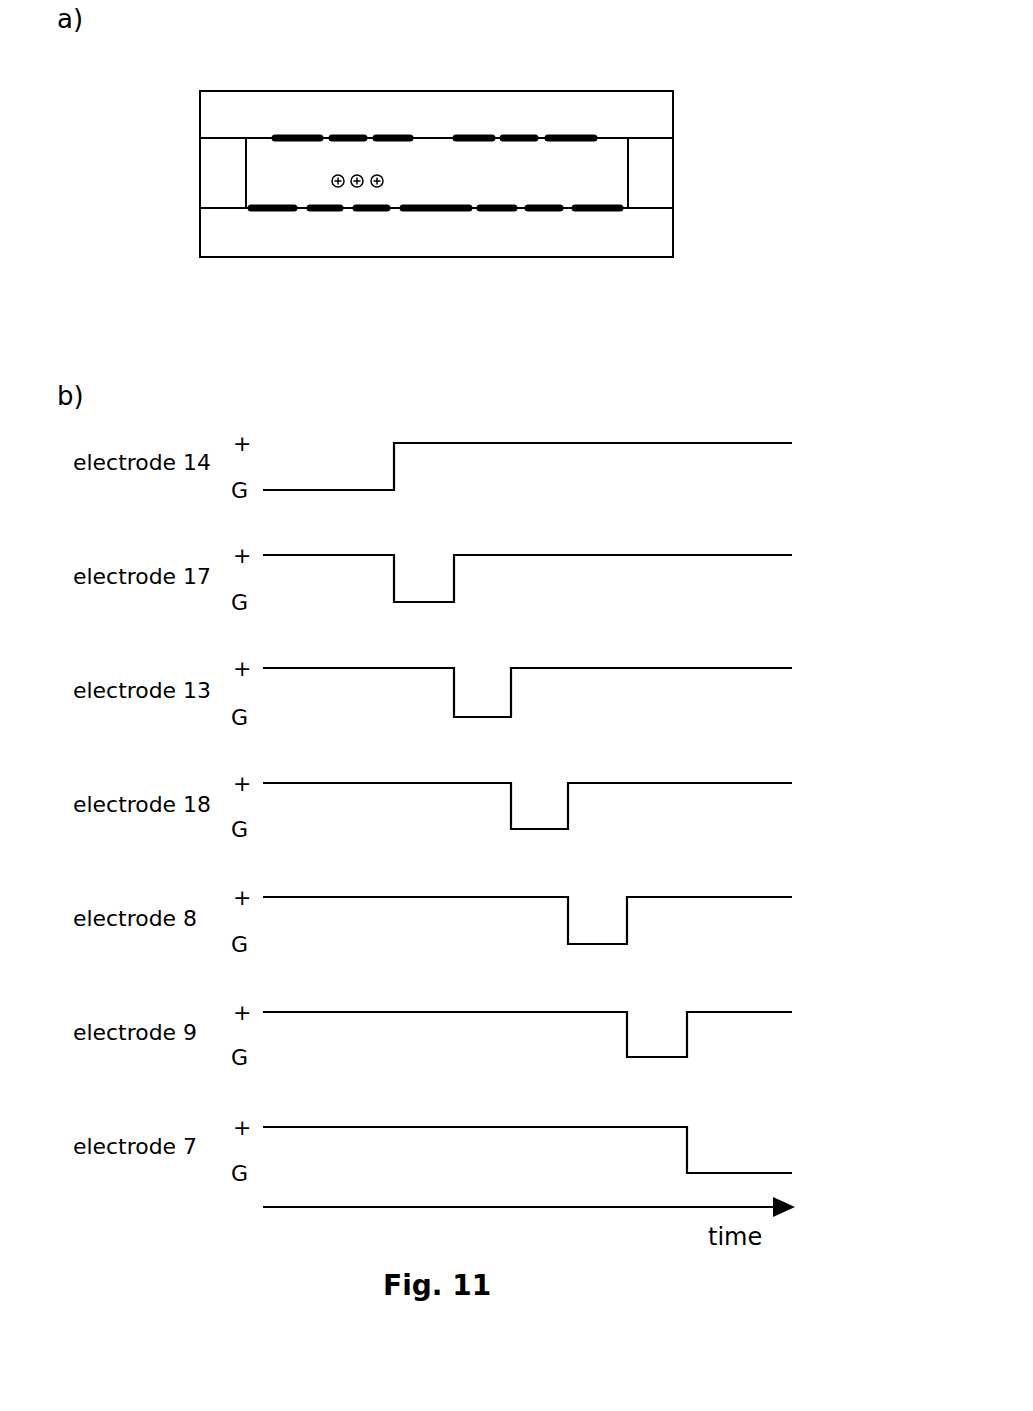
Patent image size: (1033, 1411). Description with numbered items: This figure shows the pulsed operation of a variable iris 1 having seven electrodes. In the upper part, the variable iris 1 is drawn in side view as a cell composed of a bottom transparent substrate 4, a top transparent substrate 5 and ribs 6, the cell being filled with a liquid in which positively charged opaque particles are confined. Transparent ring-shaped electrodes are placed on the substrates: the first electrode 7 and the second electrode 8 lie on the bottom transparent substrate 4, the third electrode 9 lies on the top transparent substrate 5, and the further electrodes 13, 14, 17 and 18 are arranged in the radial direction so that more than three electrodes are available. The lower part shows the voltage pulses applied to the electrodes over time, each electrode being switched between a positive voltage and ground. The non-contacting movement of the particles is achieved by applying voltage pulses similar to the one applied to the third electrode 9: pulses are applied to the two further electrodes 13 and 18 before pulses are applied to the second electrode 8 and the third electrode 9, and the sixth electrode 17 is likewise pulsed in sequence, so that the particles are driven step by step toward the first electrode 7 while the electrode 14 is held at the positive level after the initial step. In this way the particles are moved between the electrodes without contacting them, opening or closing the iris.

The variable iris 1 is at (290, 58).
The bottom transparent substrate 4 is at (522, 255).
The top transparent substrate 5 is at (480, 90).
The ribs 6 is at (198, 180).
The first electrode 7 is at (280, 212).
The second electrode 8 is at (330, 212).
The third electrode 9 is at (302, 130).
The further electrode 13 is at (370, 212).
The electrode 14 (bottom) 14 is at (435, 212).
The sixth electrode 17 is at (393, 132).
The further electrode 18 is at (347, 132).